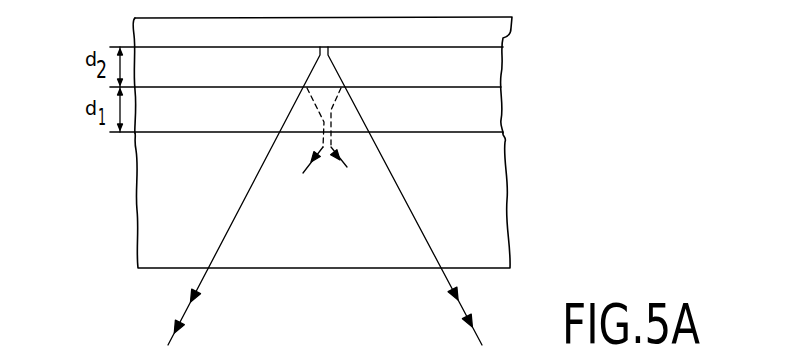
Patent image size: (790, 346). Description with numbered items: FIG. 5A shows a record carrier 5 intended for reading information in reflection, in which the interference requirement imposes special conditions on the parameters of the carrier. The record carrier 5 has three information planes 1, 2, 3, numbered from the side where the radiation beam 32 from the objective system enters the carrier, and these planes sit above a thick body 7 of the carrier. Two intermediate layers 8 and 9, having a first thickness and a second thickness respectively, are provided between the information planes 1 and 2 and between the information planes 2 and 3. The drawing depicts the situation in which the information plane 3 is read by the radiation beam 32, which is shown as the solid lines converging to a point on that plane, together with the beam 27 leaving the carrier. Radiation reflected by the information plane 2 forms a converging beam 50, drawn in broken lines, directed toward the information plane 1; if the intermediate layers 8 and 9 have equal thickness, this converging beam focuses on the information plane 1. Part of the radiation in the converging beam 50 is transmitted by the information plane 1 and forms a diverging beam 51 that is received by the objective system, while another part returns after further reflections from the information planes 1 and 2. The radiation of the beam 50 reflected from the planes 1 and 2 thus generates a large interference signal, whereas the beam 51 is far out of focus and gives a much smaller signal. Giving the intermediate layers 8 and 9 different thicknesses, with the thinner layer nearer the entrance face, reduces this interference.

The record carrier 5 is at (48, 72).
The substrate 7 is at (490, 193).
The information plane 3 is at (495, 41).
The intermediate layer 9 is at (488, 62).
The information plane 2 is at (490, 77).
The intermediate layer 8 is at (485, 103).
The information plane 1 is at (490, 133).
The incident light beam 27 is at (281, 196).
The radiation beam 32 is at (468, 316).
The converging beam 50 is at (332, 116).
The diverging beam 51 is at (345, 165).